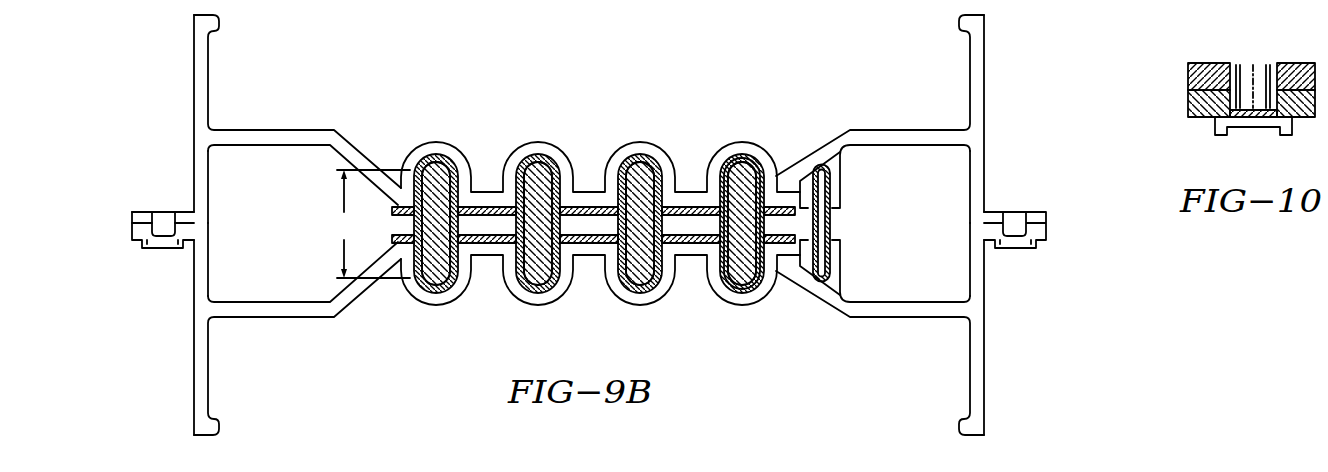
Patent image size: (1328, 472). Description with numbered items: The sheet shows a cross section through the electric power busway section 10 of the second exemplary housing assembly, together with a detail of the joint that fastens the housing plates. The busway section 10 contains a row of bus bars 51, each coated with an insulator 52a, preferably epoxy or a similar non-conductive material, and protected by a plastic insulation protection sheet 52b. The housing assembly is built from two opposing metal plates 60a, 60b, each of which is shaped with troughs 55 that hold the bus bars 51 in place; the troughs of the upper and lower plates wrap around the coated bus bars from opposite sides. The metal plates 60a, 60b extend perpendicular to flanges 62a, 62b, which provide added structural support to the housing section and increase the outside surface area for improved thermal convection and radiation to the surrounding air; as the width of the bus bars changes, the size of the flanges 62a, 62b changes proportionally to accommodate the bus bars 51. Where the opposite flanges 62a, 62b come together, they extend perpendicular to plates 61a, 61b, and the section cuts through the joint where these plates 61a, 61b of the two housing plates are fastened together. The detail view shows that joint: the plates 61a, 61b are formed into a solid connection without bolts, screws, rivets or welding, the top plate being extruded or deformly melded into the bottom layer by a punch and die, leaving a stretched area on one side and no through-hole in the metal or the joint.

In FIG. 9B, the electric power busway section 10 is at (762, 67).
In FIG. 9B, the bus bar 51 is at (758, 284).
In FIG. 9B, the insulator 52a is at (727, 292).
In FIG. 9B, the plastic insulation protection sheet 52b is at (745, 292).
In FIG. 9B, the trough 55 is at (640, 145).
In FIG. 9B, the metal plate 60a is at (491, 191).
In FIG. 9B, the metal plate 60b is at (371, 293).
In FIG. 9B, the plate 61a is at (159, 204).
In FIG. 10, the plate 61a is at (1199, 63).
In FIG. 9B, the plate 61b is at (158, 252).
In FIG. 10, the plate 61b is at (1200, 118).
In FIG. 9B, the flange 62a is at (986, 86).
In FIG. 9B, the flange 62b is at (986, 353).